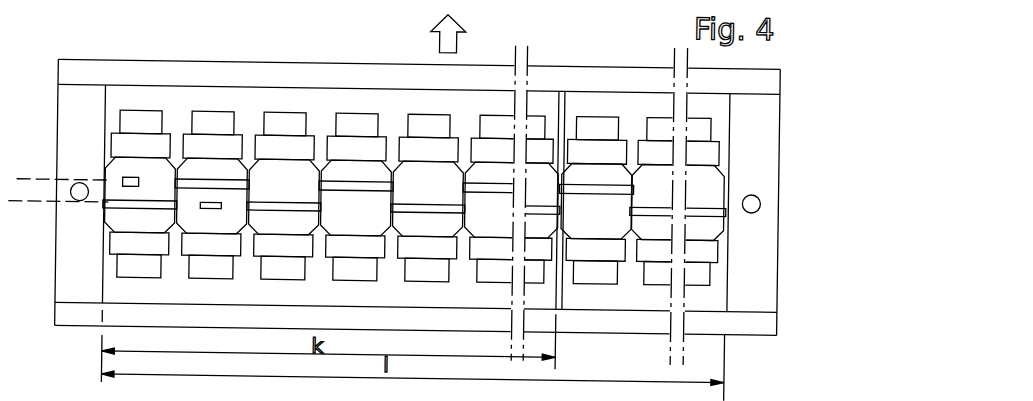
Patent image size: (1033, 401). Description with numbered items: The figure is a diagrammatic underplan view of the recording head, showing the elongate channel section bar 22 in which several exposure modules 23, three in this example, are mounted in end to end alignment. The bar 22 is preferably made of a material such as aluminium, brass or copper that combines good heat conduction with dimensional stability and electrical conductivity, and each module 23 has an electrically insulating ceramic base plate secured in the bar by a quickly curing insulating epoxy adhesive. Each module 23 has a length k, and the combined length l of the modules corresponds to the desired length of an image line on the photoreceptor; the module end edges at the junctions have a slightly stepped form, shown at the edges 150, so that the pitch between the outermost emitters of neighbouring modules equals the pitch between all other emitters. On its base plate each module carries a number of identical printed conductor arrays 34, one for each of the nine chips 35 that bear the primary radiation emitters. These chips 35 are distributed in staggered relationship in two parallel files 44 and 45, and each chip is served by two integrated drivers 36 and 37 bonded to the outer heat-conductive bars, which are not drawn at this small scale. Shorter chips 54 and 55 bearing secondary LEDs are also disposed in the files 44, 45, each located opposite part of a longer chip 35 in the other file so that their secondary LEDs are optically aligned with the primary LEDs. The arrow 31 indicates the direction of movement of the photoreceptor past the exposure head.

The channel section bar 22 is at (103, 67).
The exposure module 23 is at (617, 93).
The arrow 31 is at (455, 40).
The conductor array 34 is at (203, 170).
The chip 35 is at (280, 205).
The integrated driver 36 is at (350, 143).
The integrated driver 37 is at (422, 245).
The file 44 is at (41, 180).
The file 45 is at (39, 202).
The chip bearing secondary LEDs 54 is at (124, 183).
The chip bearing secondary LEDs 55 is at (213, 210).
The stepped end edge 150 is at (570, 228).